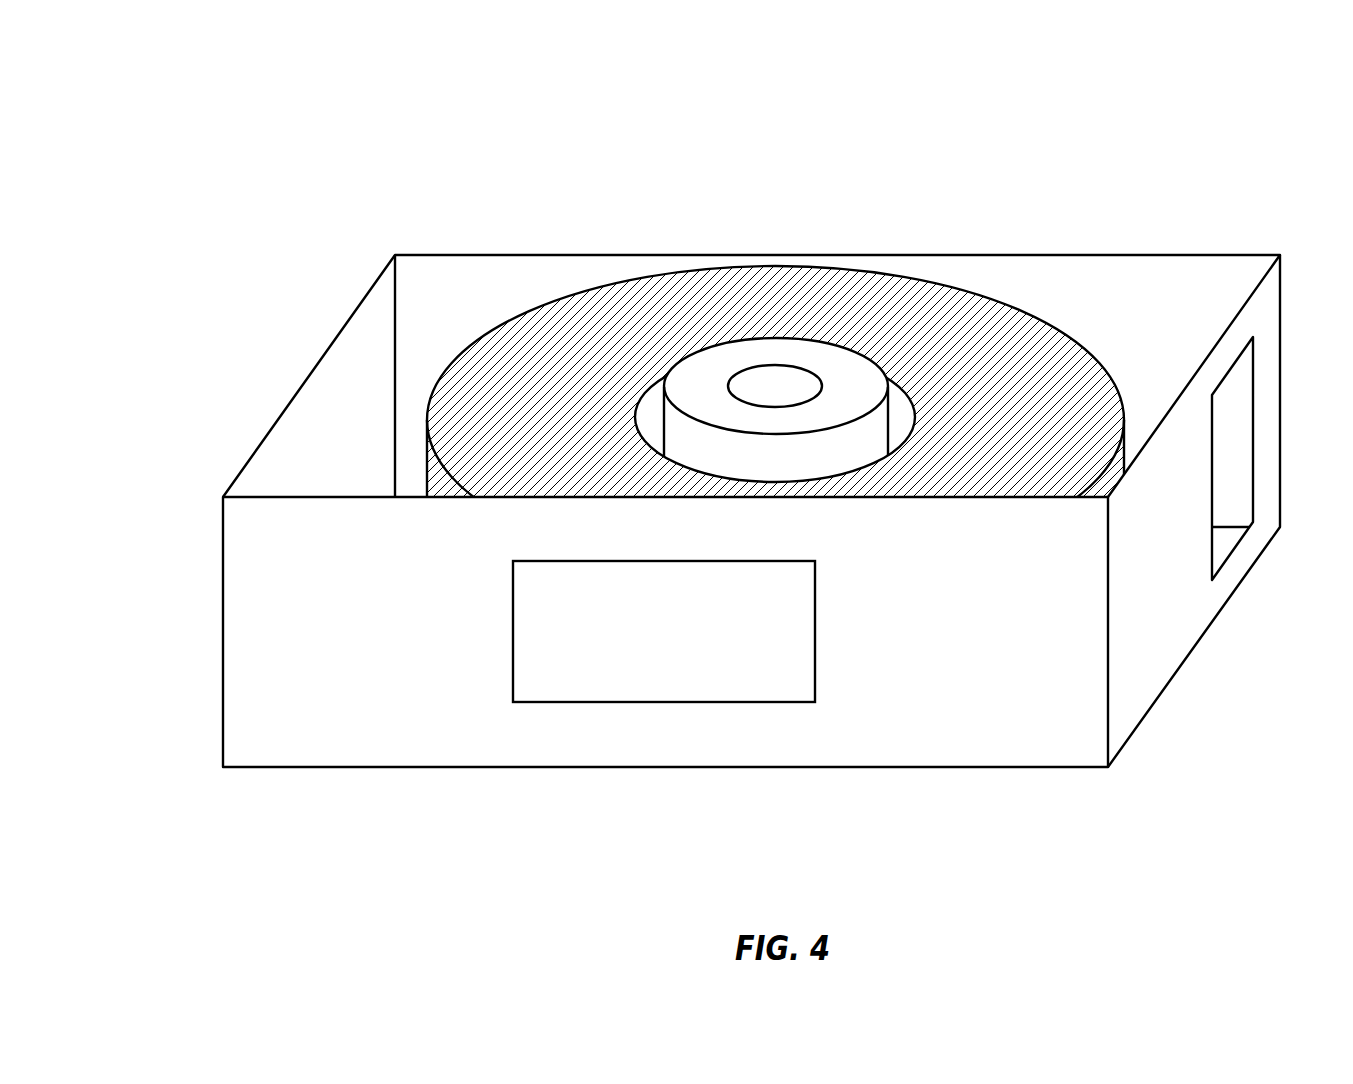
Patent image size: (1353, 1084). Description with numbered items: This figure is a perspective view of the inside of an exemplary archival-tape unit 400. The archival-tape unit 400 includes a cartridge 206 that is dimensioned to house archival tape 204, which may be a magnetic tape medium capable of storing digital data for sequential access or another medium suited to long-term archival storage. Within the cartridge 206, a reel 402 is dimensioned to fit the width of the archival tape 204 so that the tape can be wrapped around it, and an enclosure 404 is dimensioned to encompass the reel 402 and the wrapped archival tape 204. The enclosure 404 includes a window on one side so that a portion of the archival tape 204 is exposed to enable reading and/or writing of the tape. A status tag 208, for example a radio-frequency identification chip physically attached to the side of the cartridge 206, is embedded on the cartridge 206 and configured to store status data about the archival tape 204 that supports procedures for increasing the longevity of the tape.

The archival-tape unit 400 is at (192, 144).
The archival tape 204 is at (905, 277).
The cartridge 206 is at (653, 255).
The status tag 208 is at (653, 693).
The reel 402 is at (778, 352).
The enclosure 404 is at (1170, 678).